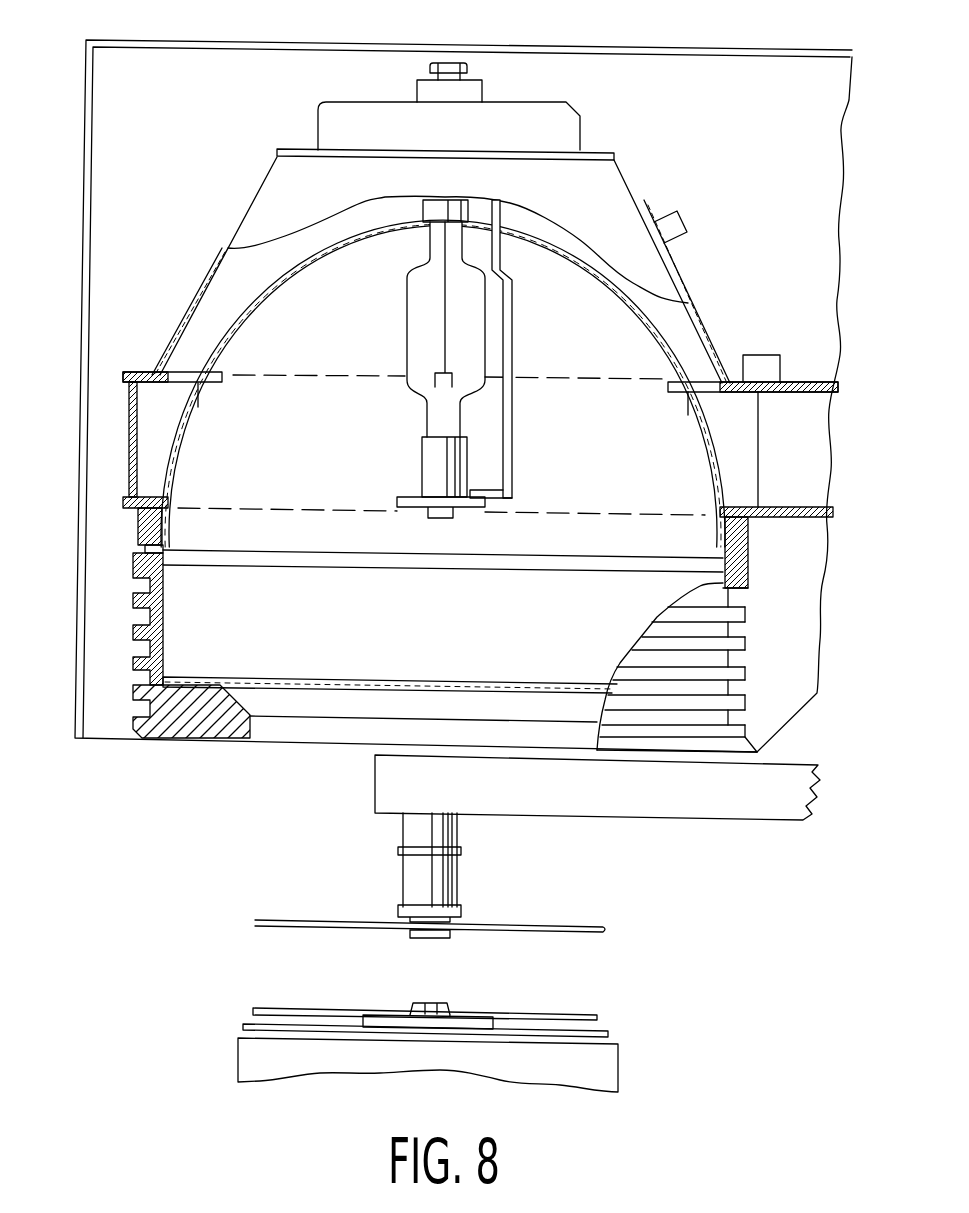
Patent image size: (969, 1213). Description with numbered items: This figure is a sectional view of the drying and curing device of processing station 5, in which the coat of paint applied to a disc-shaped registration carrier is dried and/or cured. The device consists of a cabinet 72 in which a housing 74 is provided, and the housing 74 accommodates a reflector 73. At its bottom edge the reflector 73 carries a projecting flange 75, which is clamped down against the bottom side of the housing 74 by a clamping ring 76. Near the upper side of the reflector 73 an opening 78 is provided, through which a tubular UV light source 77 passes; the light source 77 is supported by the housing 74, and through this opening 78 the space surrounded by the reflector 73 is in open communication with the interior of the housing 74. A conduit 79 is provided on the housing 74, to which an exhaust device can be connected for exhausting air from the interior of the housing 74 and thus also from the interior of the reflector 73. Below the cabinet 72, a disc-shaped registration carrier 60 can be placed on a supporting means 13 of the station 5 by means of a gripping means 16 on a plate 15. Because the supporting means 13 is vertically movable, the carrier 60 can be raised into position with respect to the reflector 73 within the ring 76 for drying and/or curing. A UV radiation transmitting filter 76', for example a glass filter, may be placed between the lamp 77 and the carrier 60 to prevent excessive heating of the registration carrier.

The cabinet 72 is at (564, 45).
The housing 74 is at (257, 187).
The opening 78 is at (400, 243).
The UV light source 77 is at (405, 320).
The reflector 73 is at (197, 429).
The conduit 79 is at (790, 437).
The projecting flange 75 is at (147, 557).
The UV radiation transmitting filter 76' is at (390, 660).
The clamping ring 76 is at (445, 697).
The station 5 is at (160, 757).
The support plate 15 is at (740, 797).
The gripping means 16 is at (423, 870).
The carrier 60 is at (577, 933).
The supporting means 13 is at (607, 1033).